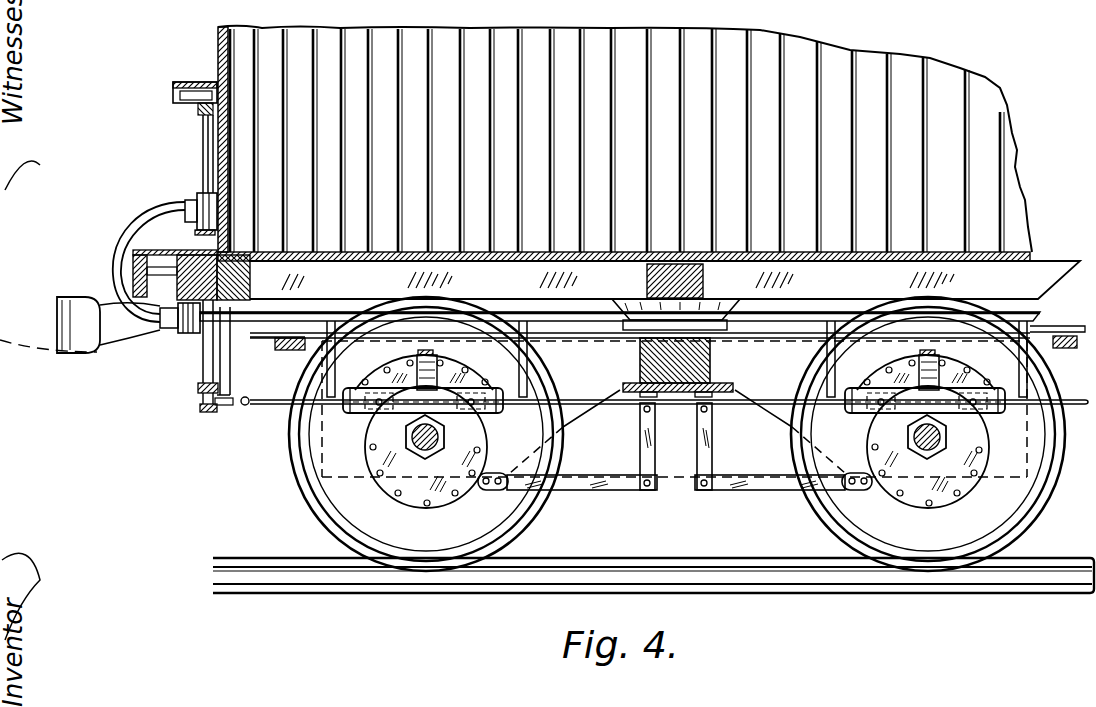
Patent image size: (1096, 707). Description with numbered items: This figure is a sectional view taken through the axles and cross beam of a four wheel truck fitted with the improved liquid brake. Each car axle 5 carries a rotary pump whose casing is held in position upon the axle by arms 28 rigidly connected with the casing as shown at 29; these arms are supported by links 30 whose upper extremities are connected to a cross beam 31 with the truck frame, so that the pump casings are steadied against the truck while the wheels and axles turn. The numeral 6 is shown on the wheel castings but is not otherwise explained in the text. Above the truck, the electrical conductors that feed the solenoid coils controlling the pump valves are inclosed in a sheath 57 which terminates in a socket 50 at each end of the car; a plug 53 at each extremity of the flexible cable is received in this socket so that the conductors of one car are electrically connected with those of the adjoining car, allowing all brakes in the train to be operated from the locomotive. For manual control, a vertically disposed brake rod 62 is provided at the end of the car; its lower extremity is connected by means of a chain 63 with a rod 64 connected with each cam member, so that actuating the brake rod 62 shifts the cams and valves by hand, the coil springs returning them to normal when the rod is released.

The car axle 5 is at (421, 456).
The wheel center plate and journal box 6 is at (674, 440).
The arm 28 is at (580, 484).
The rigid connection of arm to casing 29 is at (489, 492).
The link 30 is at (641, 438).
The cross beam 31 is at (703, 366).
The socket 50 is at (182, 336).
The plug 53 is at (183, 203).
The sheath 57 is at (813, 312).
The brake rod 62 is at (204, 162).
The chain 63 is at (228, 413).
The rod 64 is at (272, 408).